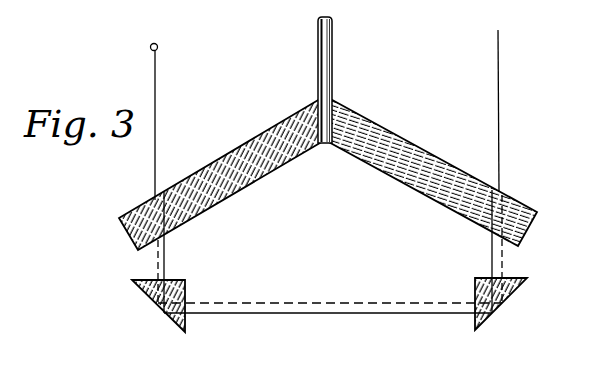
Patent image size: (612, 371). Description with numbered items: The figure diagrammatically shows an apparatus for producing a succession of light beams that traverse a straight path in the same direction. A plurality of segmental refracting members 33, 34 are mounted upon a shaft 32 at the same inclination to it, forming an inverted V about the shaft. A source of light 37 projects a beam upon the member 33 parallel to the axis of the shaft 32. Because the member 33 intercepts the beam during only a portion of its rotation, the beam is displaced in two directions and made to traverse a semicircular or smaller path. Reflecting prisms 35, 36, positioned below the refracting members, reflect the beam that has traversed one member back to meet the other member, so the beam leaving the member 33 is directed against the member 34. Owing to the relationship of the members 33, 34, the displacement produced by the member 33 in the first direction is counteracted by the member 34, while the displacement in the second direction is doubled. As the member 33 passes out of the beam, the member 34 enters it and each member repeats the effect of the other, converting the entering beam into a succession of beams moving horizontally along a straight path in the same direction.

The shaft 32 is at (323, 60).
The segmental refracting member 33 is at (216, 165).
The segmental refracting member 34 is at (428, 165).
The reflecting prism 35 is at (144, 298).
The reflecting prism 36 is at (508, 292).
The source of light 37 is at (157, 45).